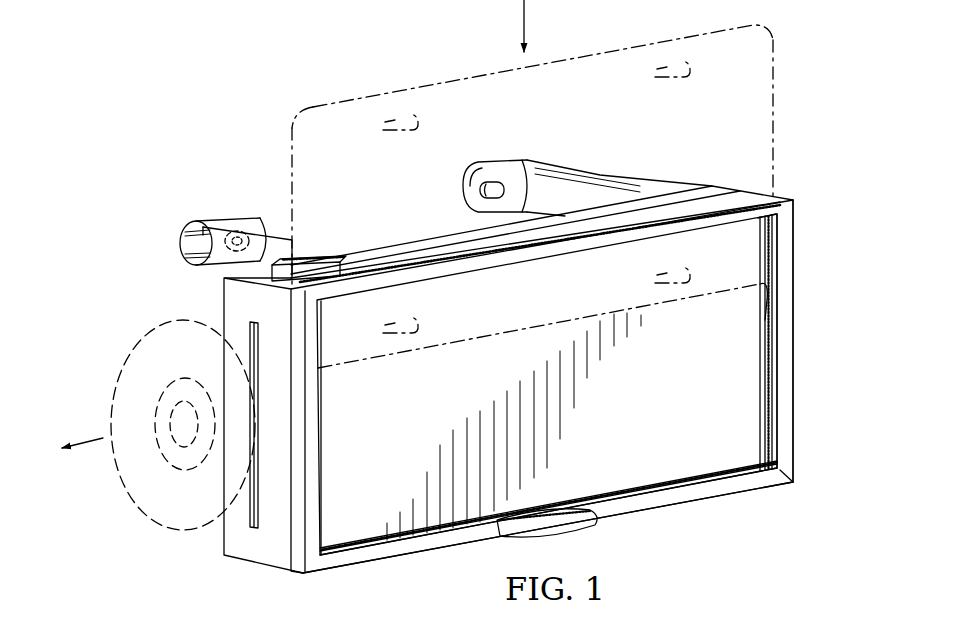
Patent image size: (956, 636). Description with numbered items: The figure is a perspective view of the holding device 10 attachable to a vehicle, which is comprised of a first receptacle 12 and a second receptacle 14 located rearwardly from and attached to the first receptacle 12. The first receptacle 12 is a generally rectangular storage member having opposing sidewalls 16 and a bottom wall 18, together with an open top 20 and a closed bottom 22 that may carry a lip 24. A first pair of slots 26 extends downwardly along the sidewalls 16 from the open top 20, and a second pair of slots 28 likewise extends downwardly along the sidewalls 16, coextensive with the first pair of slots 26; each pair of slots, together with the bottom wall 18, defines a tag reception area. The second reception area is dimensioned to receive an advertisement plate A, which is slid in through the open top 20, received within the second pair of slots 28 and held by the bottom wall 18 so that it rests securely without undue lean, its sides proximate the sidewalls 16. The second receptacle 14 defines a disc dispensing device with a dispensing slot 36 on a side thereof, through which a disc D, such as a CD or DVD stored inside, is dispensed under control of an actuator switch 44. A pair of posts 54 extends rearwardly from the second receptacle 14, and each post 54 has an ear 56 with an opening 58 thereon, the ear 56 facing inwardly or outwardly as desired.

The holding device 10 is at (188, 48).
The first receptacle 12 is at (302, 578).
The second receptacle 14 is at (247, 565).
The sidewalls 16 is at (787, 423).
The bottom wall 18 is at (655, 500).
The open top 20 is at (778, 200).
The closed bottom 22 is at (745, 495).
The lip 24 is at (513, 537).
The first pair of slots 26 is at (778, 365).
The second pair of slots 28 is at (768, 312).
The dispensing slot 36 is at (253, 517).
The actuator switch 44 is at (270, 266).
The posts 54 is at (193, 245).
The ear 56 is at (260, 226).
The opening 58 is at (234, 231).
The advertisement plate A is at (766, 82).
The disc D is at (113, 357).